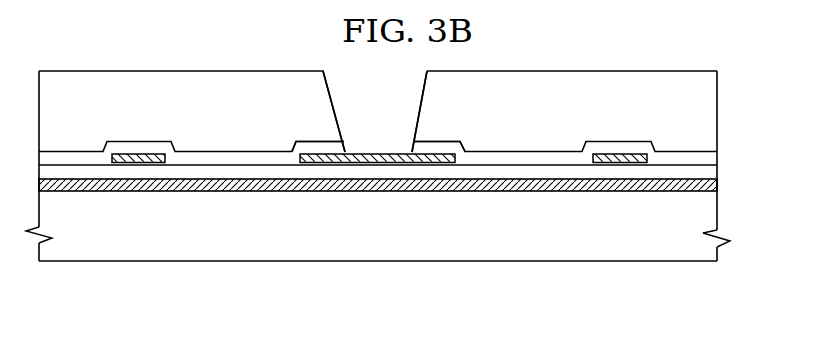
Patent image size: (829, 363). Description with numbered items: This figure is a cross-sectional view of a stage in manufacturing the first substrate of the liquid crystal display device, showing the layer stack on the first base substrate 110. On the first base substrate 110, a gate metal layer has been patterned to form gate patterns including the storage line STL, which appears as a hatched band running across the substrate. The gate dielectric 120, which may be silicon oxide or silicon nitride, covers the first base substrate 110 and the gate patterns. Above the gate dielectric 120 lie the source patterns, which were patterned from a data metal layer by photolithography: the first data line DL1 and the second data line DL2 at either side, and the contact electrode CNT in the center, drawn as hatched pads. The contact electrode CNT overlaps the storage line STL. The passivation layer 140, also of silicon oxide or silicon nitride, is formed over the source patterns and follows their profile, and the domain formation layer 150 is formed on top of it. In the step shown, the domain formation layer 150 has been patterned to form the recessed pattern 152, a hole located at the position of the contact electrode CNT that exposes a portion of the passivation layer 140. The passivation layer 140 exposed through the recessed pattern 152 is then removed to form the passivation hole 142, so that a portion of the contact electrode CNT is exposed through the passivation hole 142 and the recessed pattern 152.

The domain formation layer 150 is at (713, 108).
The passivation layer 140 is at (714, 160).
The gate dielectric 120 is at (714, 175).
The storage line STL is at (713, 187).
The first base substrate 110 is at (713, 218).
The first data line DL1 is at (130, 162).
The second data line DL2 is at (613, 154).
The passivation hole 142 is at (379, 145).
The contact electrode CNT is at (335, 154).
The recessed pattern 152 is at (357, 115).